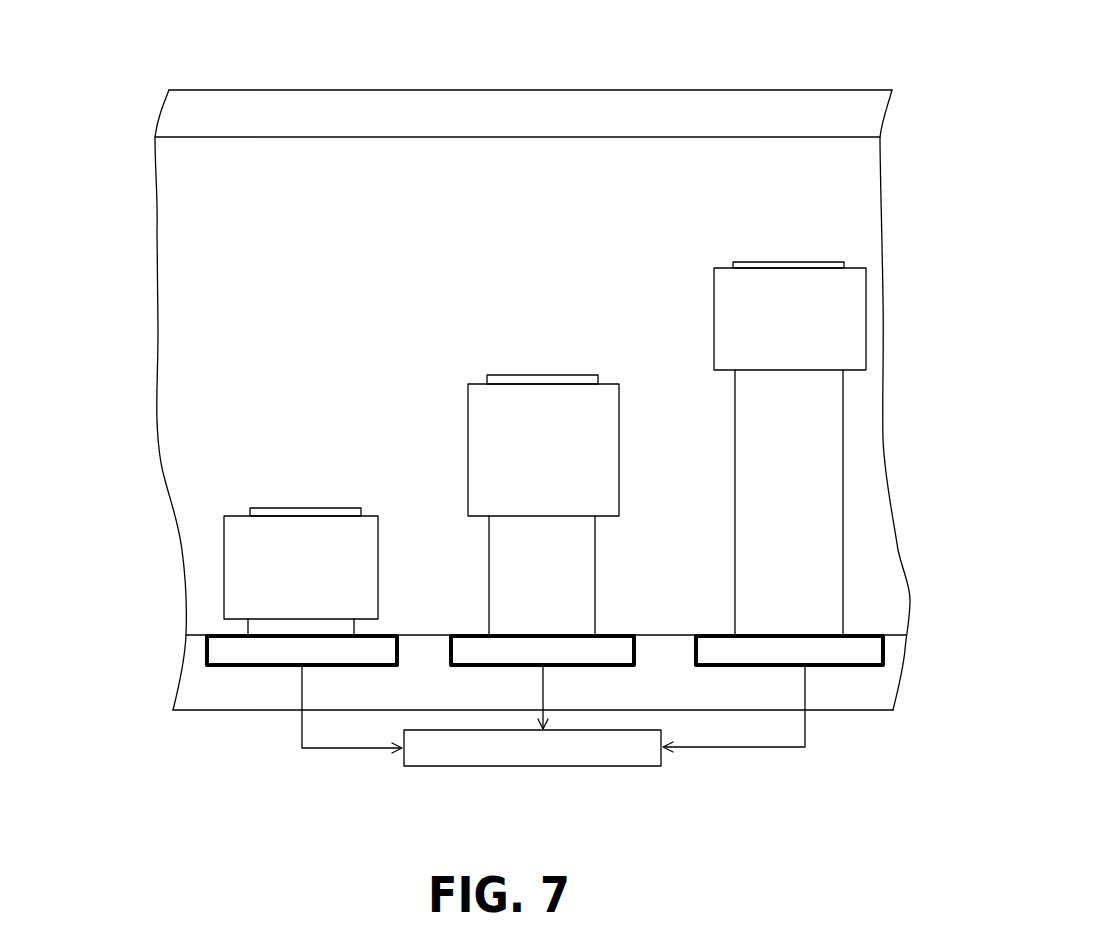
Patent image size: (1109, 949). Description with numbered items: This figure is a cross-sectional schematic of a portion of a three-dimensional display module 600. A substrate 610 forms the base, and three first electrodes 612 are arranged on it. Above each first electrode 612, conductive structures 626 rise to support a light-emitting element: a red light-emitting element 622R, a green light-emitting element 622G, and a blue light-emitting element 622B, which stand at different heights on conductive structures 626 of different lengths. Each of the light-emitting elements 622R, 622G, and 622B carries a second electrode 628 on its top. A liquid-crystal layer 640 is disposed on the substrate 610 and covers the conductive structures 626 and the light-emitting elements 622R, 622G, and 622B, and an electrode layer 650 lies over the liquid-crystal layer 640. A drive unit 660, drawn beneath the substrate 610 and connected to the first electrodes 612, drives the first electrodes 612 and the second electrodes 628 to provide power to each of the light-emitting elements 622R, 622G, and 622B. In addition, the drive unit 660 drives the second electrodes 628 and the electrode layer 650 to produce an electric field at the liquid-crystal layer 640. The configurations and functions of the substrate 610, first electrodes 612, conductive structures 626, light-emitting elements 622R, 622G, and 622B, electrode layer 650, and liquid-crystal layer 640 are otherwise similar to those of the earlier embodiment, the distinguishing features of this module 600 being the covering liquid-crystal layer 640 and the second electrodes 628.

The three-dimensional display module 600 is at (960, 38).
The substrate 610 is at (195, 681).
The first electrodes 612 is at (242, 648).
The light-emitting element 622R is at (253, 556).
The light-emitting element 622G is at (480, 465).
The light-emitting element 622B is at (855, 320).
The conductive structures 626 is at (250, 628).
The second electrode 628 is at (530, 380).
The liquid-crystal layer 640 is at (185, 256).
The electrode layer 650 is at (872, 121).
The drive unit 660 is at (653, 758).